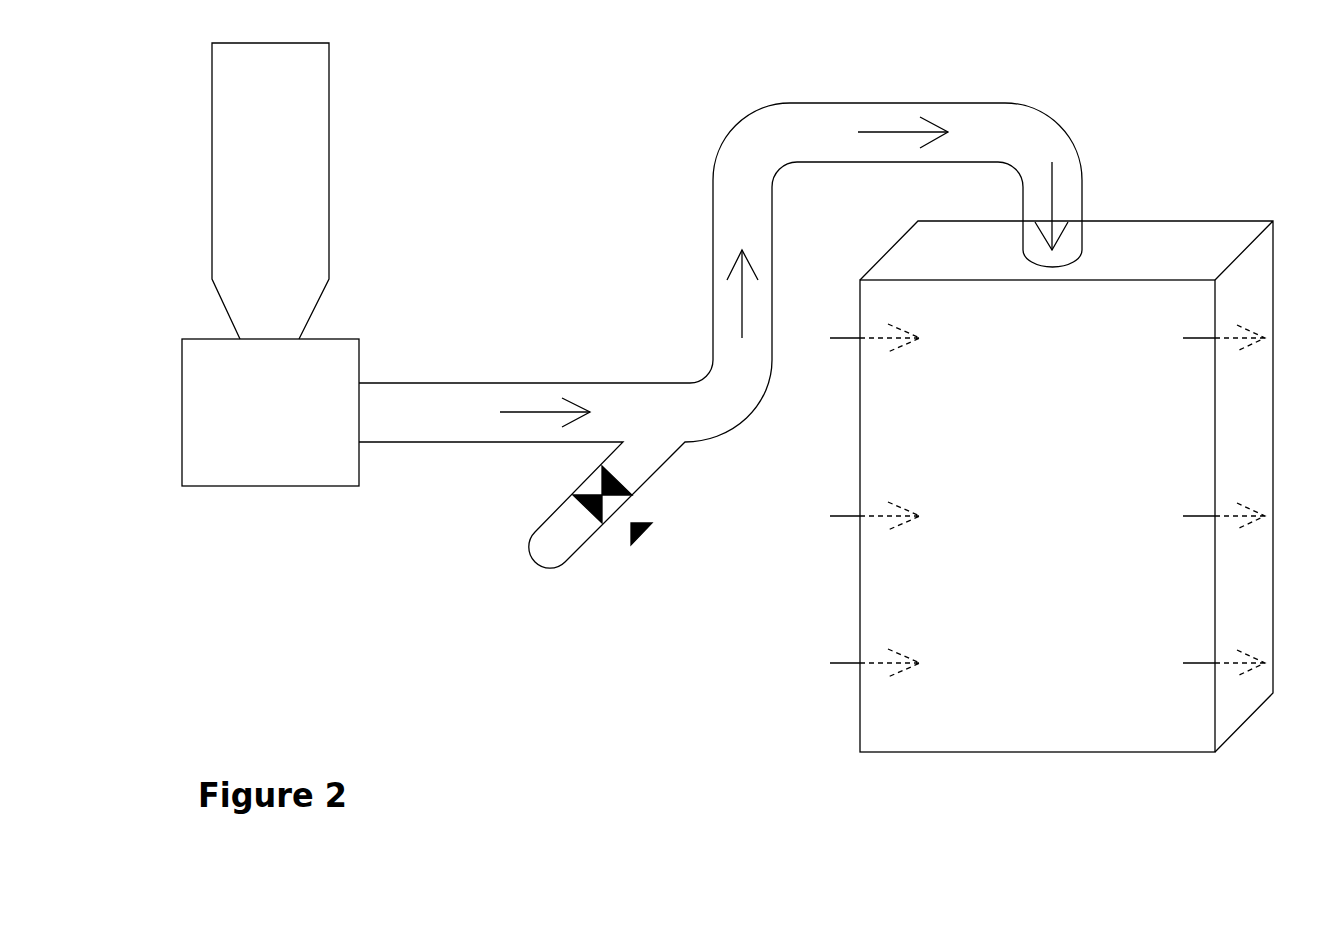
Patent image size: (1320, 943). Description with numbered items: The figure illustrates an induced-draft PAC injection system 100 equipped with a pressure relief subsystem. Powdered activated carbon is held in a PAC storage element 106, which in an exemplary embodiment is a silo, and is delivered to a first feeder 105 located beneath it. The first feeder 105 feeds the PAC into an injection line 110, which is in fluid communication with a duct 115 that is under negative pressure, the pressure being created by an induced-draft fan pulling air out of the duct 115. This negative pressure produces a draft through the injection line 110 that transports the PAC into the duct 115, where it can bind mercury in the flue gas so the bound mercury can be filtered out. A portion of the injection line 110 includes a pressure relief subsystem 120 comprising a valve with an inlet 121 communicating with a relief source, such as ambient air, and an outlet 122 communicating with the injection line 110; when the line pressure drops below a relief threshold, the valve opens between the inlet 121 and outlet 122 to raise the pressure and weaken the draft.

The induced-draft PAC injection system 100 is at (757, 51).
The first feeder 105 is at (299, 457).
The PAC storage element 106 is at (299, 161).
The injection line 110 is at (713, 310).
The duct 115 is at (920, 575).
The pressure relief subsystem 120 is at (647, 538).
The inlet 121 is at (588, 510).
The outlet 122 is at (620, 477).